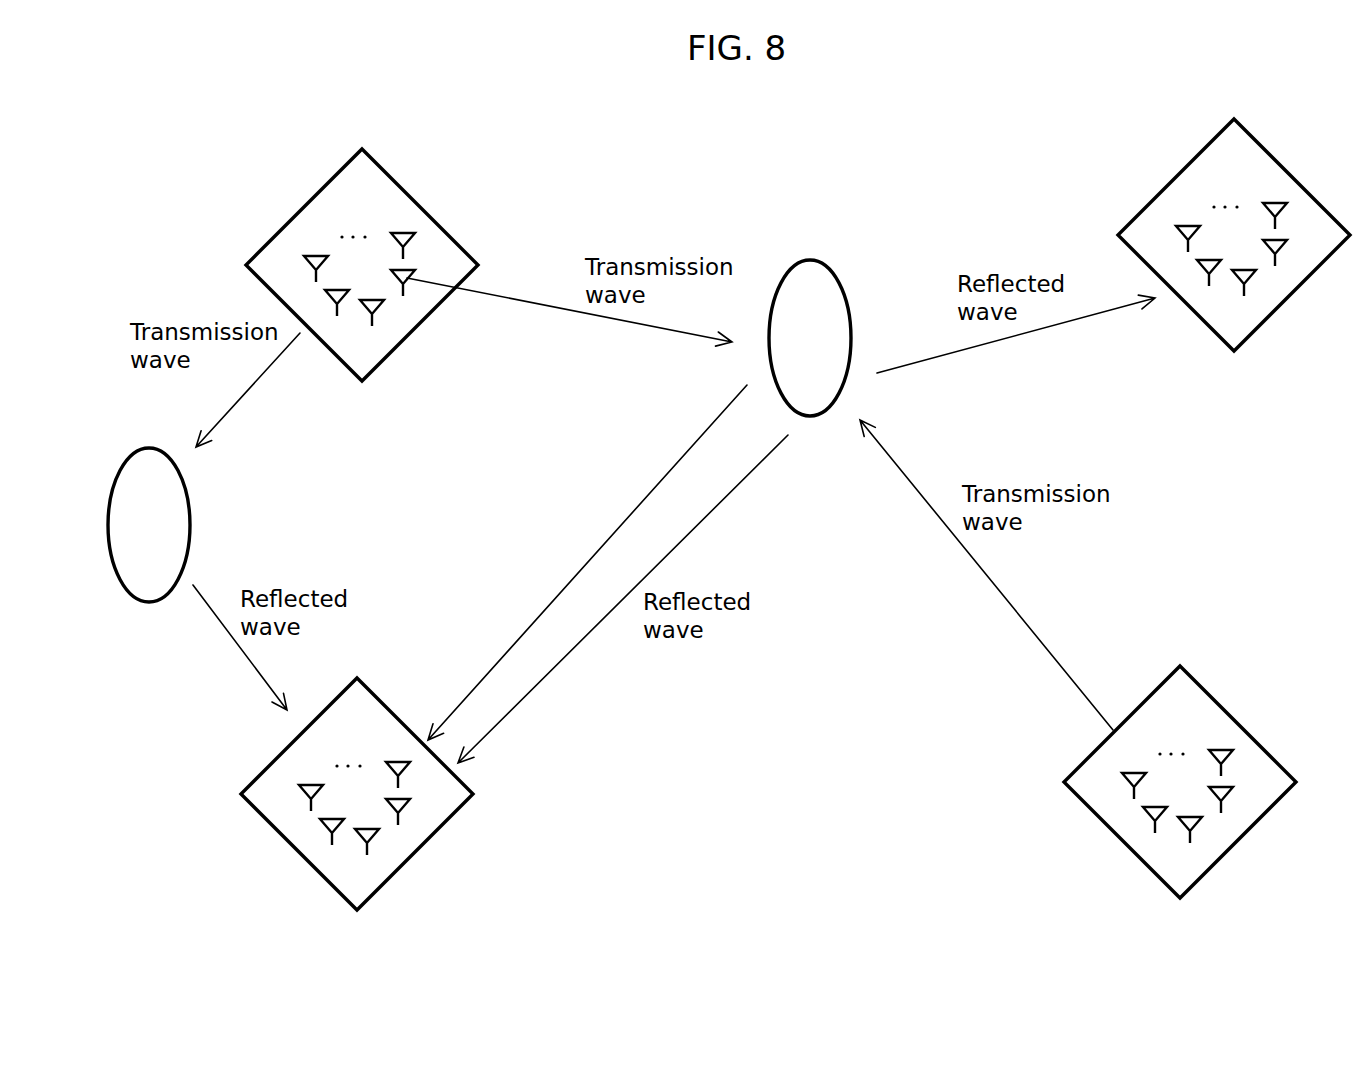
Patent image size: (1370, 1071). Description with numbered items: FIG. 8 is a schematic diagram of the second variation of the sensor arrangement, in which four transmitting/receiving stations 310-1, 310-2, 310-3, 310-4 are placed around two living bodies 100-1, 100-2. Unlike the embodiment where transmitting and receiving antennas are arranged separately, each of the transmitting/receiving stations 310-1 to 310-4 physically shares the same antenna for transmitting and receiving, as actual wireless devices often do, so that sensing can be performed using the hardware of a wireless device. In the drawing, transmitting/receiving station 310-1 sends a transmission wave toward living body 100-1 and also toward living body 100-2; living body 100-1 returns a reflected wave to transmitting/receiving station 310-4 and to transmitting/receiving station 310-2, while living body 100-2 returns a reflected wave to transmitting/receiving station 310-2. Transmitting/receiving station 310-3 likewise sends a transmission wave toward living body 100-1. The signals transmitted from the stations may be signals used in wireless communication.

The transmitting/receiving station 310-1 is at (373, 158).
The transmitting/receiving station 310-2 is at (427, 845).
The transmitting/receiving station 310-3 is at (1118, 838).
The transmitting/receiving station 310-4 is at (1150, 200).
The living body 100-1 is at (827, 262).
The living body 100-2 is at (148, 448).